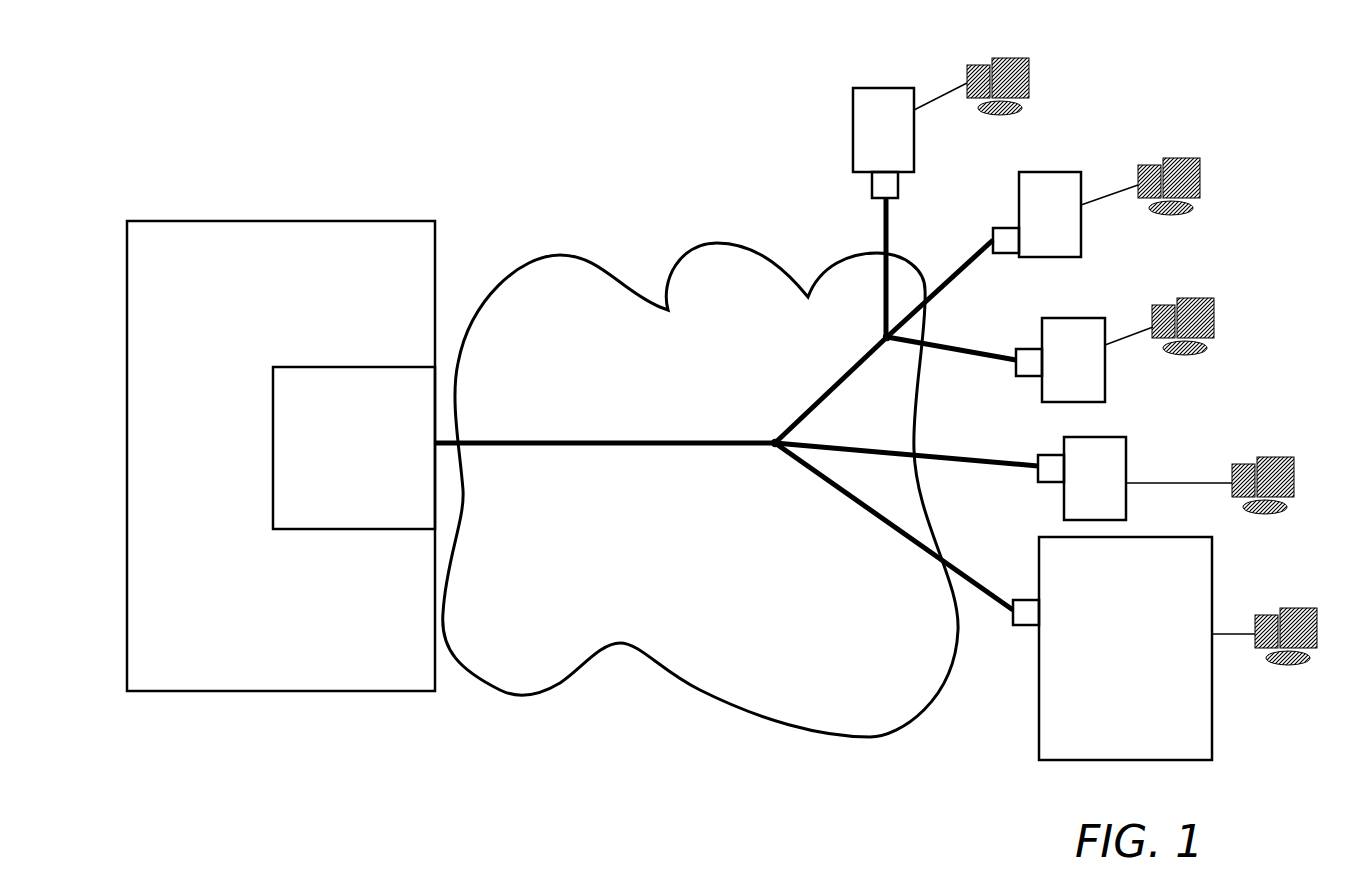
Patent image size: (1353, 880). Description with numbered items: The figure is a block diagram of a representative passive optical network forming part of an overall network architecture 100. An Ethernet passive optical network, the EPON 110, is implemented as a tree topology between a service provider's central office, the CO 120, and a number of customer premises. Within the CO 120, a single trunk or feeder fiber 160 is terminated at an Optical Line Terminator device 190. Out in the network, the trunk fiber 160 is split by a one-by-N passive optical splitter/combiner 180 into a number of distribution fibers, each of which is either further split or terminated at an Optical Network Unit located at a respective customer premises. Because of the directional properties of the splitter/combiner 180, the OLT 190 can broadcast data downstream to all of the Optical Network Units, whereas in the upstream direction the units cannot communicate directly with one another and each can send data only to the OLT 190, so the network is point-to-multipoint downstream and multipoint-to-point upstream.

The overall network architecture 100 is at (1281, 50).
The EPON 110 is at (717, 243).
The central office 120 is at (284, 221).
The Optical Line Terminator device 190 is at (273, 367).
The trunk fiber 160 is at (596, 443).
The passive optical splitter/combiner 180 is at (773, 441).